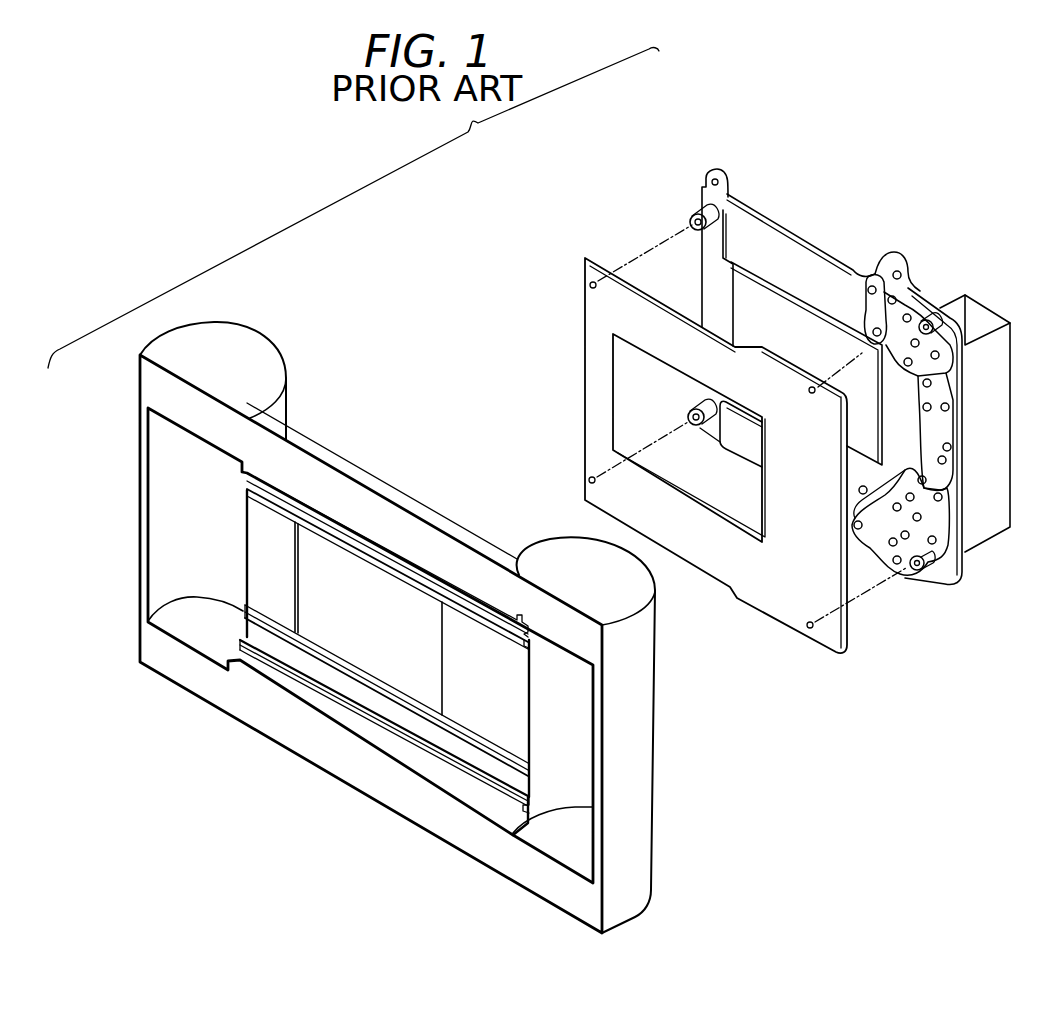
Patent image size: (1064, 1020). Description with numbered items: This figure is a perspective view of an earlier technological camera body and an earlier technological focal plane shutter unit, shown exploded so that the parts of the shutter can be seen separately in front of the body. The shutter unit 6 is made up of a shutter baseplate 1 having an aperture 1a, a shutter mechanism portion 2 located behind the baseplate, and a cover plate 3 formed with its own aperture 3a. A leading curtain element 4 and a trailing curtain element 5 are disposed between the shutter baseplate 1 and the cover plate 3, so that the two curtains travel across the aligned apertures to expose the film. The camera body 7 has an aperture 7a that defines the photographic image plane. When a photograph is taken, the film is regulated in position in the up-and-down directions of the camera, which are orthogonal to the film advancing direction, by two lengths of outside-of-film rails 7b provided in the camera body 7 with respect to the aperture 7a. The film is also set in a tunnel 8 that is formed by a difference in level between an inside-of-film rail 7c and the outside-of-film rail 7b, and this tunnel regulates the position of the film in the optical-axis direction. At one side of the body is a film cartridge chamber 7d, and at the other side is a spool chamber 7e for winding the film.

The shutter baseplate 1 is at (958, 580).
The aperture 1a is at (728, 292).
The shutter mechanism portion 2 is at (995, 528).
The cover plate 3 is at (828, 650).
The aperture 3a is at (623, 408).
The leading curtain element 4 is at (738, 445).
The trailing curtain element 5 is at (805, 270).
The shutter unit 6 is at (690, 152).
The camera body 7 is at (252, 336).
The aperture 7a is at (303, 588).
The outside-of-film rails 7b is at (530, 636).
The inside-of-film rail 7c is at (243, 608).
The film cartridge chamber 7d is at (558, 848).
The spool chamber 7e is at (190, 635).
The tunnel 8 is at (430, 735).